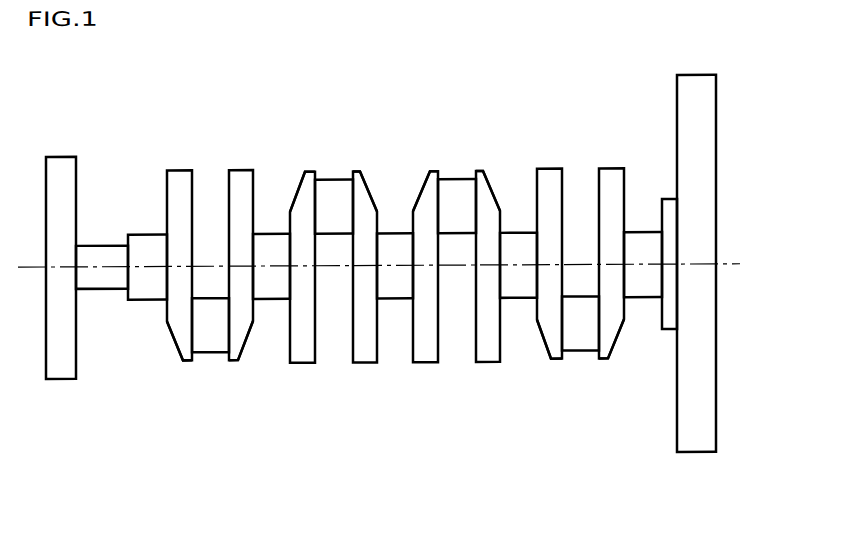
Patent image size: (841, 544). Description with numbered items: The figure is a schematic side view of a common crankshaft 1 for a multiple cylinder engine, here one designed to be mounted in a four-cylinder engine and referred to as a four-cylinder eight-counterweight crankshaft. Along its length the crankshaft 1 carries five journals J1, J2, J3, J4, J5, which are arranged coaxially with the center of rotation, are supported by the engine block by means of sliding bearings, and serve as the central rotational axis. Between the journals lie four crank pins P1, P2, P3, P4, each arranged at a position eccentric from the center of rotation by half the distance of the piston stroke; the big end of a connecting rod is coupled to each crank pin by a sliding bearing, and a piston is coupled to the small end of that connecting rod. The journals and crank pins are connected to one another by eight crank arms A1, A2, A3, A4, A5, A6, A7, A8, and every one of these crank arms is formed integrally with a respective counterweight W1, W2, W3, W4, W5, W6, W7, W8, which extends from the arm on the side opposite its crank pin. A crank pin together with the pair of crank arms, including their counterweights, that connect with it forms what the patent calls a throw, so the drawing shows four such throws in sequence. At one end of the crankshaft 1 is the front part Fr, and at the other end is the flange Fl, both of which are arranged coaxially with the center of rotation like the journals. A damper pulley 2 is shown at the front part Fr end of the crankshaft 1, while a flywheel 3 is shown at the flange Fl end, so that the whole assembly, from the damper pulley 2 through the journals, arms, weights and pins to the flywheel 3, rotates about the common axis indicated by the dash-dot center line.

The crankshaft 1 is at (570, 95).
The damper pulley 2 is at (61, 163).
The flywheel 3 is at (695, 86).
The front part Fr is at (102, 253).
The flange Fl is at (664, 333).
The journal J1 is at (145, 236).
The journal J2 is at (272, 234).
The journal J3 is at (393, 235).
The journal J4 is at (517, 235).
The journal J5 is at (643, 235).
The counterweight W1 is at (175, 170).
The counterweight W2 is at (240, 170).
The counterweight W3 is at (303, 359).
The counterweight W4 is at (370, 359).
The counterweight W5 is at (423, 360).
The counterweight W6 is at (490, 360).
The counterweight W7 is at (549, 170).
The counterweight W8 is at (613, 170).
The crank pin P1 is at (210, 354).
The crank pin P2 is at (333, 182).
The crank pin P3 is at (455, 182).
The crank pin P4 is at (580, 351).
The crank arm A1 is at (182, 340).
The crank arm A2 is at (240, 340).
The crank arm A3 is at (305, 195).
The crank arm A4 is at (362, 190).
The crank arm A5 is at (426, 192).
The crank arm A6 is at (487, 192).
The crank arm A7 is at (553, 339).
The crank arm A8 is at (611, 340).